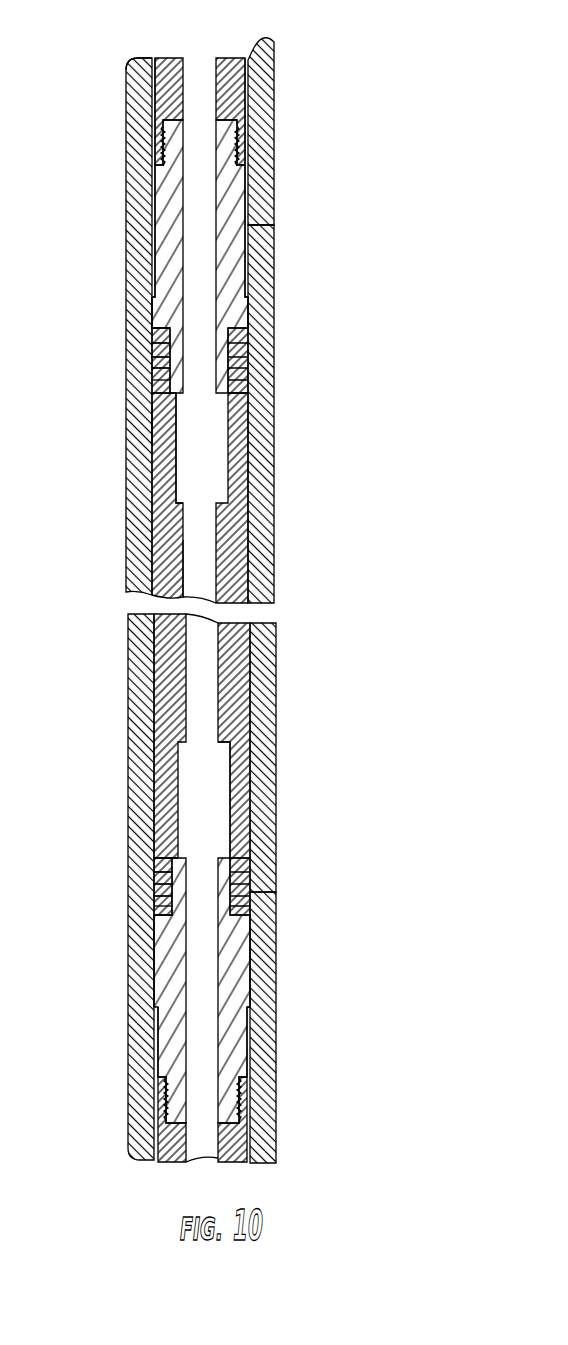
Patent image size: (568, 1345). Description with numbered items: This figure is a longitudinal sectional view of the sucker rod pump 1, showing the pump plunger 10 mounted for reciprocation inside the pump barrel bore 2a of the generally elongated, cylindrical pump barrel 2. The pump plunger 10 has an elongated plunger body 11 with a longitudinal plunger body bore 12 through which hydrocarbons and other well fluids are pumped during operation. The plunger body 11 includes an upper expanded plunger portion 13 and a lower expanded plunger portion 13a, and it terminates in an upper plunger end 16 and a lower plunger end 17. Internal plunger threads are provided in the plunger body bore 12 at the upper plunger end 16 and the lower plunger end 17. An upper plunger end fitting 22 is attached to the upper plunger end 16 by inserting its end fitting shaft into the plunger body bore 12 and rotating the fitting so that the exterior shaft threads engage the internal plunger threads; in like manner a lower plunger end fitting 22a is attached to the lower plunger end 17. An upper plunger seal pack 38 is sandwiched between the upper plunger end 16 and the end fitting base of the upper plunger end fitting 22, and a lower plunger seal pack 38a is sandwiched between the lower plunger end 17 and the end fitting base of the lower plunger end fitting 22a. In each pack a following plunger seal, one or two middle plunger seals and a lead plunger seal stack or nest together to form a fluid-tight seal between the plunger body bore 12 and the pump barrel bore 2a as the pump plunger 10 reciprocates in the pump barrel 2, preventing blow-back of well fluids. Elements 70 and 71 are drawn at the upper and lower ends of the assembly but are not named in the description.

The sucker rod pump 1 is at (86, 70).
The pump barrel 2 is at (124, 258).
The pump barrel bore 2a is at (152, 1025).
The pump plunger 10 is at (146, 418).
The plunger body 11 is at (146, 432).
The plunger body bore 12 is at (195, 554).
The upper expanded plunger portion 13 is at (168, 517).
The lower expanded plunger portion 13a is at (160, 727).
The upper plunger end 16 is at (248, 362).
The lower plunger end 17 is at (252, 890).
The upper plunger end fitting 22 is at (248, 204).
The lower plunger end fitting 22a is at (254, 1025).
The upper plunger seal pack 38 is at (268, 332).
The lower plunger seal pack 38a is at (270, 855).
The upper end cap 70 is at (170, 57).
The lower end cap 71 is at (175, 1143).